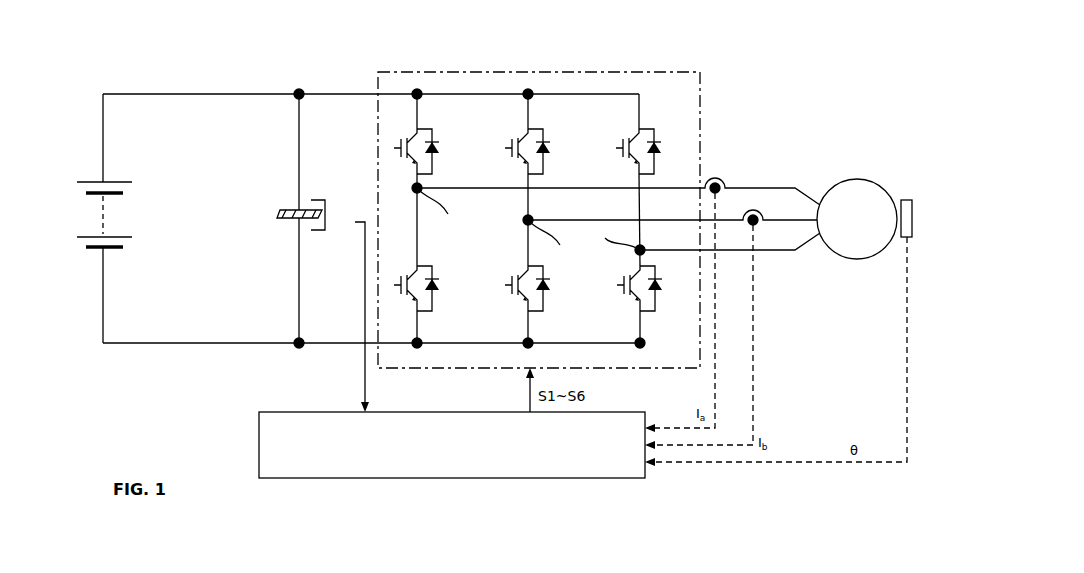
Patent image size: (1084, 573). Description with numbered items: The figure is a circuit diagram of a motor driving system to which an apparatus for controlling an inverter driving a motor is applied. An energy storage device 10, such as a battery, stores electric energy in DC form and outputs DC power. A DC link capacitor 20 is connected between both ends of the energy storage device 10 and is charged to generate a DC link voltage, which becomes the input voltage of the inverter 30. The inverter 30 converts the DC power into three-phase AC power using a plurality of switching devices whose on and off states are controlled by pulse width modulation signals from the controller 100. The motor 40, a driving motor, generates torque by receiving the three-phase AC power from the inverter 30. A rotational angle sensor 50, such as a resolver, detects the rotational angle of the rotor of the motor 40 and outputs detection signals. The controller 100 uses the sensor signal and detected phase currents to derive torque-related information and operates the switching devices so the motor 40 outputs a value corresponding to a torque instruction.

The energy storage device 10 is at (90, 255).
The DC link capacitor 20 is at (283, 205).
The inverter 30 is at (540, 72).
The motor 40 is at (858, 178).
The rotational angle sensor 50 is at (906, 200).
The controller 100 is at (452, 478).